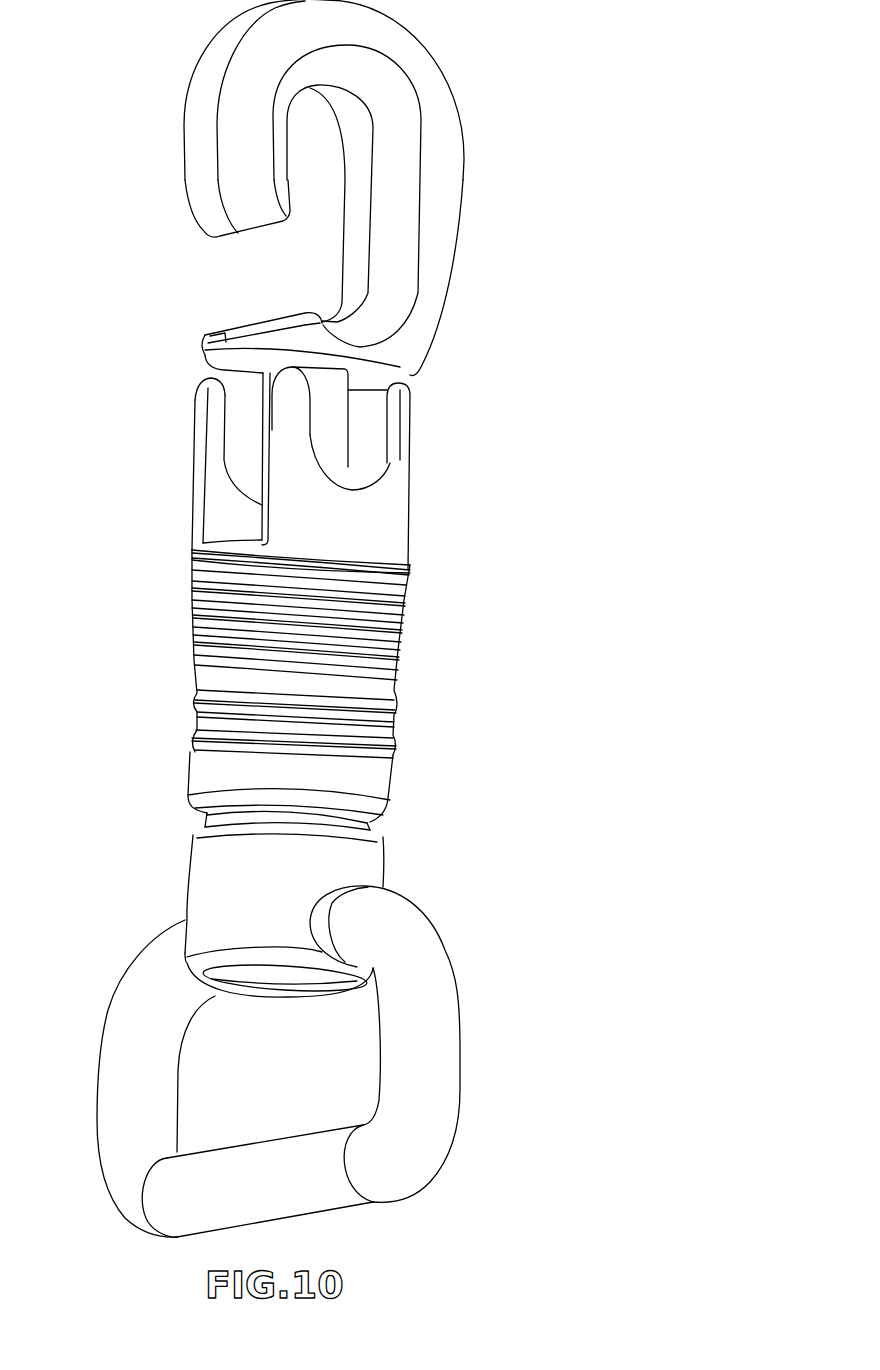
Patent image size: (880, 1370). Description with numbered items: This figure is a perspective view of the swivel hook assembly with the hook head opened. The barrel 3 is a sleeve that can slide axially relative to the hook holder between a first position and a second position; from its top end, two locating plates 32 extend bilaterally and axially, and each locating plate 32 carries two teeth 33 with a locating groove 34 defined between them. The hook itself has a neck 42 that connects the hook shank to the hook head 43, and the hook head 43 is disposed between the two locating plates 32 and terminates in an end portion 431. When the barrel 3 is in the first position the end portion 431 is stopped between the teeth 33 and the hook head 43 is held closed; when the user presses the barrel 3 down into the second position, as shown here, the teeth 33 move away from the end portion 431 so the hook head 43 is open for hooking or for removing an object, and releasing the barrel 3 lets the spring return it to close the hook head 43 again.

The barrel 3 is at (343, 618).
The locating plate 32 is at (360, 530).
The teeth 33 is at (297, 414).
The locating groove 34 is at (350, 480).
The neck 42 is at (205, 335).
The hook head 43 is at (298, 188).
The end portion 431 is at (256, 219).